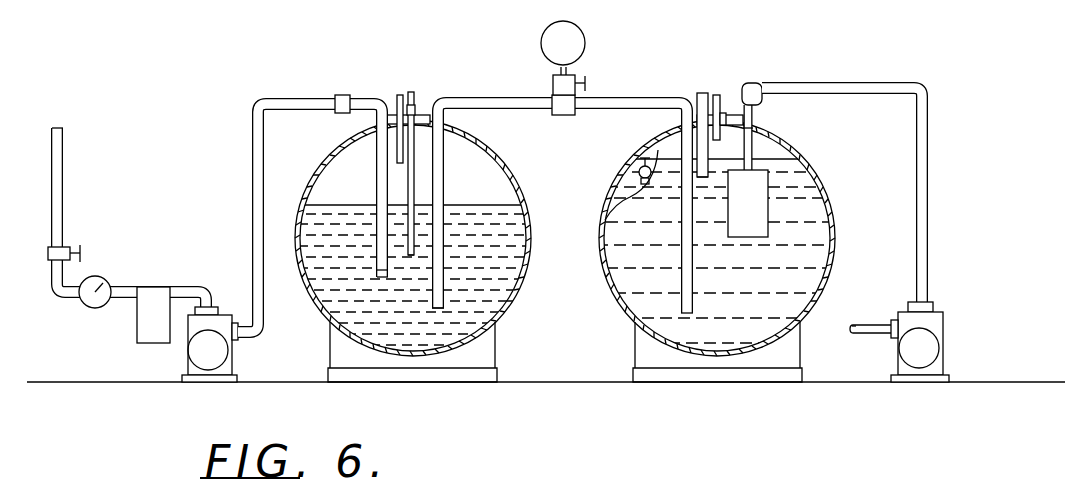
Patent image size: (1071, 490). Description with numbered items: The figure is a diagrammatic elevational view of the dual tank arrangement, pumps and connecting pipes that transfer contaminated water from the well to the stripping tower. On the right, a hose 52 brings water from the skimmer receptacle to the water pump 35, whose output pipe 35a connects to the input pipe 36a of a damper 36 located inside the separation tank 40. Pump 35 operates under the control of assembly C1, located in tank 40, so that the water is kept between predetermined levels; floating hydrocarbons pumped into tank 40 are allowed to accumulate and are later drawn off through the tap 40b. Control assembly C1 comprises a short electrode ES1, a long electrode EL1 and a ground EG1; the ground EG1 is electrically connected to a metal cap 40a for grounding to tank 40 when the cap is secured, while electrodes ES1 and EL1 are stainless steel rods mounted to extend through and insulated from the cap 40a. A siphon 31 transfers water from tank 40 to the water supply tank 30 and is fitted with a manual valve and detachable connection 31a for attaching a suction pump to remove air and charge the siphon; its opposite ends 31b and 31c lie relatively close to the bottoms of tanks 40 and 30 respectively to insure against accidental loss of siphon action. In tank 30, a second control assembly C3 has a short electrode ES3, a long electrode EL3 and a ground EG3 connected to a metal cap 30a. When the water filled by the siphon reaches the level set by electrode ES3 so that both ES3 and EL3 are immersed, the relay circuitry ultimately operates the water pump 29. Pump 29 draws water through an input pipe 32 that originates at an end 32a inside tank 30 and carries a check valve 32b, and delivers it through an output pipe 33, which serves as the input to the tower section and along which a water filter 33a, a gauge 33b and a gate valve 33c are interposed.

The water pump 29 is at (193, 355).
The water supply tank 30 is at (527, 283).
The metal cap 30a is at (418, 113).
The siphon 31 is at (620, 97).
The manual valve and detachable connection 31a is at (577, 68).
The siphon end 31b is at (686, 314).
The siphon end 31c is at (440, 313).
The input pipe 32 is at (305, 74).
The end 32a is at (380, 272).
The check valve 32b is at (342, 95).
The output pipe 33 is at (57, 213).
The water filter 33a is at (157, 287).
The gauge 33b is at (96, 278).
The gate valve 33c is at (65, 250).
The water pump 35 is at (921, 340).
The output pipe 35a is at (917, 205).
The damper 36 is at (768, 200).
The input pipe 36a is at (752, 127).
The separation tank 40 is at (833, 272).
The metal cap 40a is at (738, 90).
The tap 40b is at (640, 160).
The hose 52 is at (862, 335).
The control assembly C1 is at (692, 88).
The control assembly C3 is at (390, 86).
The ground EG1 is at (710, 95).
The ground EG3 is at (412, 92).
The short electrode ES1 is at (723, 98).
The short electrode ES3 is at (402, 94).
The long electrode EL1 is at (712, 178).
The long electrode EL3 is at (410, 258).